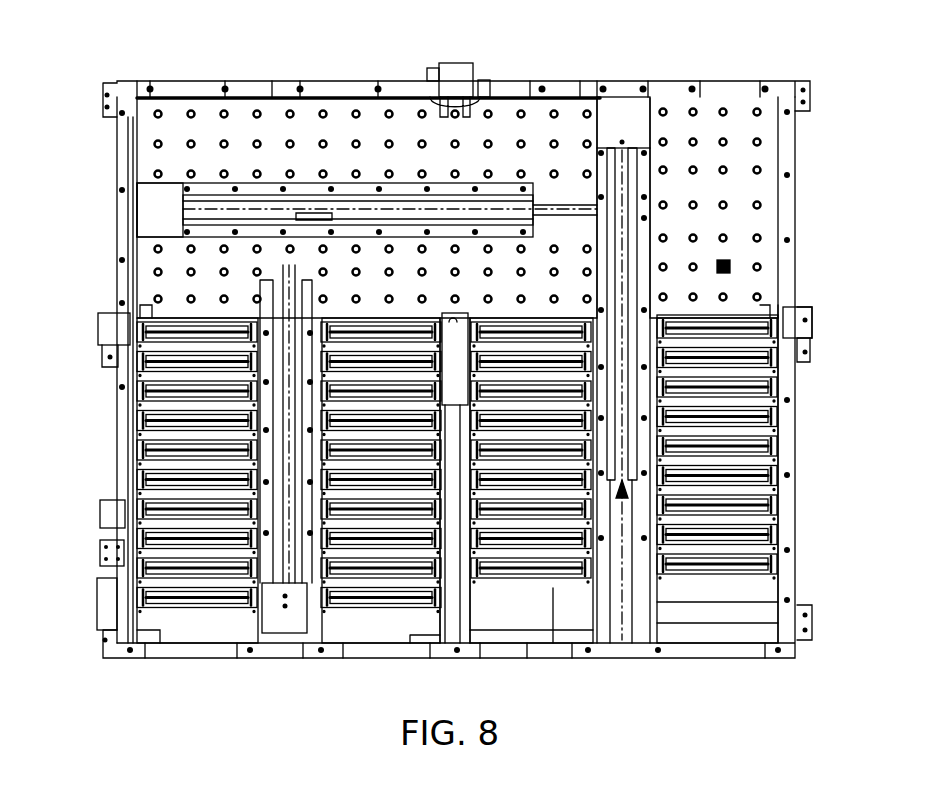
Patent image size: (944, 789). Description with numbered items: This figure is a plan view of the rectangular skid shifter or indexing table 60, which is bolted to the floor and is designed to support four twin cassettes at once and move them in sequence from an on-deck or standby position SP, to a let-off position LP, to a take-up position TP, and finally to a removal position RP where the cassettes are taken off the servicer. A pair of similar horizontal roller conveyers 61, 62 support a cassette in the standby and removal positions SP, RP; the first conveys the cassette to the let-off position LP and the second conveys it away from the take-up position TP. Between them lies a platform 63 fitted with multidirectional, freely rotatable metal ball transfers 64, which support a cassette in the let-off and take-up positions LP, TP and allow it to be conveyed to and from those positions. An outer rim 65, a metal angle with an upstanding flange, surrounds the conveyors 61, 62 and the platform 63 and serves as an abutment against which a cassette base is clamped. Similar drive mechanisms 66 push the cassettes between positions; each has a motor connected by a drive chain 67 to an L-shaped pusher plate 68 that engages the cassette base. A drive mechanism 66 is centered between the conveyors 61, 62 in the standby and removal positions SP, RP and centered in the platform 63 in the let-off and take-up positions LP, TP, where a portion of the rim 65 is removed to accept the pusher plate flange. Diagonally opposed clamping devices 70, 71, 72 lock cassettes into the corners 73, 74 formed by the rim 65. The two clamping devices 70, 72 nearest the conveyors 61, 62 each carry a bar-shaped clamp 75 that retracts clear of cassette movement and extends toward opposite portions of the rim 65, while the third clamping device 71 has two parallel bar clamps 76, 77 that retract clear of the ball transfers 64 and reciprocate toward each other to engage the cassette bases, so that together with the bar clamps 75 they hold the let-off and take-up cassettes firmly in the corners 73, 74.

The indexing table 60 is at (630, 655).
The horizontal roller conveyer 61 is at (205, 612).
The horizontal roller conveyer 62 is at (372, 605).
The platform 63 is at (270, 113).
The ball transfers 64 is at (357, 140).
The outer rim 65 is at (567, 97).
The drive mechanism 66 is at (212, 237).
The drive chain 67 is at (572, 130).
The pusher plate 68 is at (625, 115).
The clamping device 70 is at (98, 335).
The clamping device 71 is at (455, 62).
The clamping device 72 is at (812, 320).
The corner 73 is at (205, 128).
The corner 74 is at (730, 130).
The bar-shaped clamp 75 is at (140, 310).
The bar clamp 76 is at (430, 100).
The bar clamp 77 is at (490, 97).
The let-off position LP is at (235, 165).
The take-up position TP is at (680, 188).
The standby position SP is at (198, 476).
The removal position RP is at (690, 465).